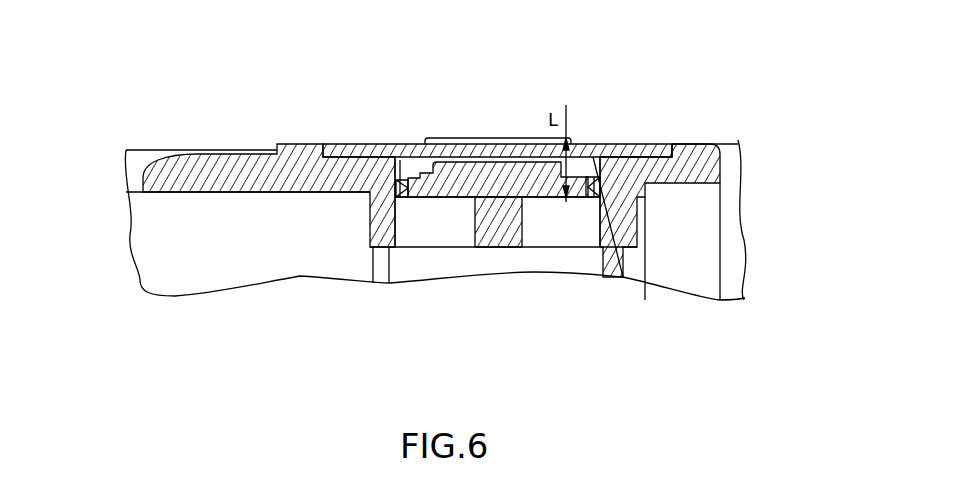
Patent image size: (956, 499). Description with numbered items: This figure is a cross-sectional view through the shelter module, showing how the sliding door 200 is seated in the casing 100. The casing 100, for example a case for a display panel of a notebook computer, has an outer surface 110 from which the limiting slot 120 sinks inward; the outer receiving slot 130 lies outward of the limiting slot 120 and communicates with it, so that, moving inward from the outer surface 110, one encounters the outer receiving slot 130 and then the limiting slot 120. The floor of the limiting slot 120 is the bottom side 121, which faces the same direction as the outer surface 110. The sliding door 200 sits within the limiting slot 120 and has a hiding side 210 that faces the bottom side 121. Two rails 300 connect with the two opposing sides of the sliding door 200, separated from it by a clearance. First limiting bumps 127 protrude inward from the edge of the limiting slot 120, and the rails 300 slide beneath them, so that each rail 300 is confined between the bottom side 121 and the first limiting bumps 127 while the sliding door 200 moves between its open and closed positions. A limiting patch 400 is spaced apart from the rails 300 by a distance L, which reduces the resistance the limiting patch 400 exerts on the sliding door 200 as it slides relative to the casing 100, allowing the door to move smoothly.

The casing 100 is at (698, 164).
The outer surface 110 is at (703, 144).
The outer receiving slot 130 is at (673, 144).
The limiting slot 120 is at (418, 157).
The limiting patch 400 is at (655, 153).
The first limiting bumps 127 is at (400, 170).
The sliding door 200 is at (507, 168).
The bottom side 121 is at (491, 190).
The rails 300 is at (418, 190).
The hiding side 210 is at (537, 200).